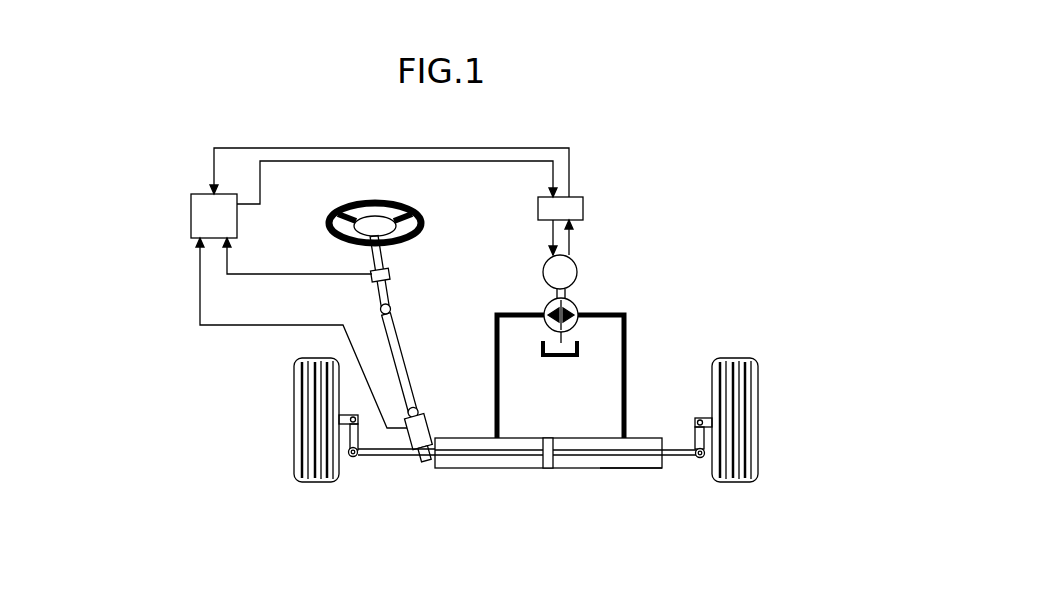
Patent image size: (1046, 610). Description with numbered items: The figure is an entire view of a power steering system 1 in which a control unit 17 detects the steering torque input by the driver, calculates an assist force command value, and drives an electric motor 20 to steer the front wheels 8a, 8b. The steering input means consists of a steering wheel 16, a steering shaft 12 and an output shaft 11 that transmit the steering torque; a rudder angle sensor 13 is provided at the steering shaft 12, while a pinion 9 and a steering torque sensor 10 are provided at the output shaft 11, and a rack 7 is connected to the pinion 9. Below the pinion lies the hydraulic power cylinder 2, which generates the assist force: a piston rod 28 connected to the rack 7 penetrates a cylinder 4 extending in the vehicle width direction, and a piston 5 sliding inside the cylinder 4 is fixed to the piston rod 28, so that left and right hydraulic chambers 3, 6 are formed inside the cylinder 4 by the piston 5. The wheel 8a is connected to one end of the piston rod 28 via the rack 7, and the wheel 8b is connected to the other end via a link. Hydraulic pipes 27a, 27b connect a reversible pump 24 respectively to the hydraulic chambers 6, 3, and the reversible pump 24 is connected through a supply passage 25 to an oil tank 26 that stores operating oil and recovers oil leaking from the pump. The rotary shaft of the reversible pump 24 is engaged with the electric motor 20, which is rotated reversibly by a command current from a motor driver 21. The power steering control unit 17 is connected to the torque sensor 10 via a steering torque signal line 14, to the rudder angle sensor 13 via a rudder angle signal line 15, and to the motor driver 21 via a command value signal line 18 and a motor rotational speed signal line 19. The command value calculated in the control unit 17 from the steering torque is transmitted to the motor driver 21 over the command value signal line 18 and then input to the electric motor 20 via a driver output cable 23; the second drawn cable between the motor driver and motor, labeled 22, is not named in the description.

The power steering system 1 is at (705, 232).
The hydraulic power cylinder 2 is at (612, 478).
The hydraulic chamber 3 is at (642, 462).
The cylinder 4 is at (580, 469).
The piston 5 is at (548, 469).
The hydraulic chamber 6 is at (487, 469).
The rack 7 is at (377, 457).
The front wheel 8a is at (315, 484).
The front wheel 8b is at (735, 484).
The pinion 9 is at (426, 462).
The steering torque sensor 10 is at (432, 432).
The output shaft 11 is at (411, 372).
The steering shaft 12 is at (392, 300).
The rudder angle sensor 13 is at (392, 275).
The steering torque signal line 14 is at (214, 326).
The rudder angle signal line 15 is at (270, 273).
The steering wheel 16 is at (346, 210).
The power steering control unit 17 is at (191, 214).
The command value signal line 18 is at (460, 162).
The motor rotational speed signal line 19 is at (527, 150).
The electric motor 20 is at (578, 272).
The motor driver 21 is at (583, 208).
The power line 22 is at (571, 242).
The driver output cable 23 is at (550, 232).
The reversible pump 24 is at (578, 306).
The supply passage 25 is at (572, 340).
The oil tank 26 is at (560, 357).
The hydraulic pipe 27a is at (496, 341).
The hydraulic pipe 27b is at (627, 356).
The piston rod 28 is at (678, 457).